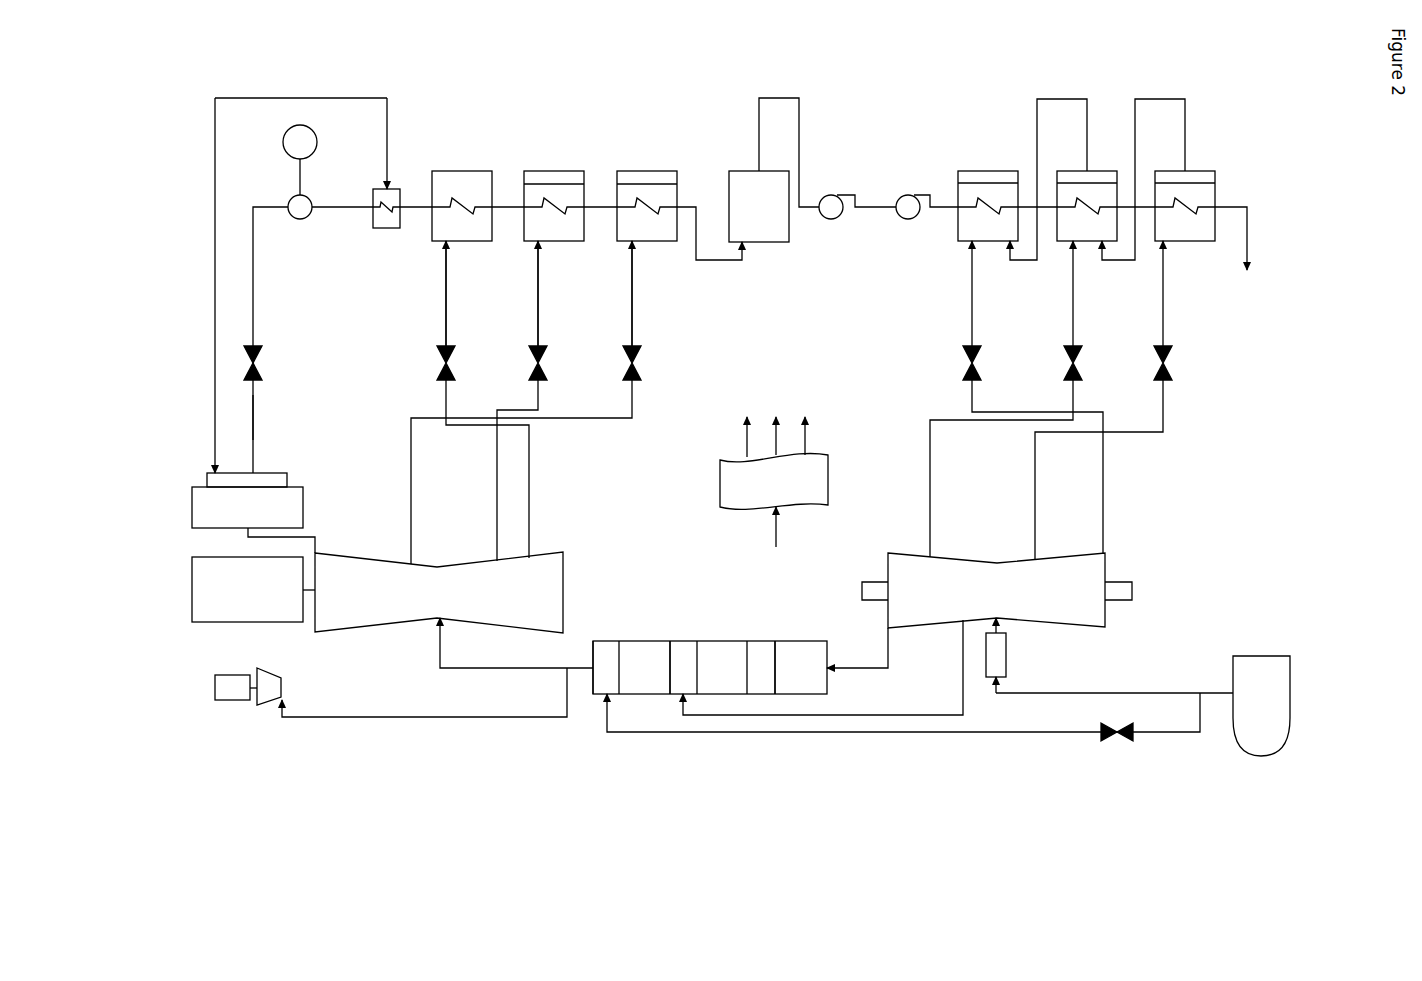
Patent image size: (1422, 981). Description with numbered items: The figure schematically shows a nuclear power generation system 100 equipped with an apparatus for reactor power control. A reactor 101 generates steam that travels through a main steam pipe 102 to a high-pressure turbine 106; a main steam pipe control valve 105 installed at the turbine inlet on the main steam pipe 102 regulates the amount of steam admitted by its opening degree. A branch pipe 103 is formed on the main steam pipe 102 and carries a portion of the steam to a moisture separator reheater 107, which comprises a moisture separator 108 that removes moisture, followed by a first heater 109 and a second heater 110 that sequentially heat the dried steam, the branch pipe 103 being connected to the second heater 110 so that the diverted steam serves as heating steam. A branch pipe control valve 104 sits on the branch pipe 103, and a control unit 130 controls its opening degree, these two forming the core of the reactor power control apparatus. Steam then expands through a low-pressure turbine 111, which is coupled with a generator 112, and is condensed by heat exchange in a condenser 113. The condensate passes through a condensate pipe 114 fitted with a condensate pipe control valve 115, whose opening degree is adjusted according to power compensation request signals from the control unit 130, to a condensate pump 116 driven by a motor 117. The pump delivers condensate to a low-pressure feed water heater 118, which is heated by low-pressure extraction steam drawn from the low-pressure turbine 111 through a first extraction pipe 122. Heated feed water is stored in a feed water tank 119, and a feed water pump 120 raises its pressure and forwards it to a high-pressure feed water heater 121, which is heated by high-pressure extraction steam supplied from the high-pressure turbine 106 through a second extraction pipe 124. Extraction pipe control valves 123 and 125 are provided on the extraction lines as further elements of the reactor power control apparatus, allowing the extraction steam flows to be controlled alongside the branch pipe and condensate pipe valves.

The nuclear power generation system 100 is at (1310, 800).
The reactor 101 is at (1290, 690).
The main steam pipe 102 is at (1163, 693).
The branch pipe 103 is at (1165, 733).
The branch pipe control valve 104 is at (1110, 741).
The main steam pipe control valve 105 is at (1006, 655).
The high-pressure turbine 106 is at (1107, 567).
The moisture separator reheater 107 is at (633, 632).
The moisture separator 108 is at (800, 678).
The first heater 109 is at (677, 690).
The second heater 110 is at (600, 692).
The low-pressure turbine 111 is at (380, 625).
The generator 112 is at (192, 594).
The condenser 113 is at (192, 512).
The condensate pipe 114 is at (252, 428).
The condensate pipe control valve 115 is at (247, 362).
The condensate pump 116 is at (302, 220).
The motor 117 is at (300, 125).
The low-pressure feed water heater 118 is at (648, 171).
The feed water tank 119 is at (742, 171).
The feed water pump 120 is at (910, 195).
The high-pressure feed water heater 121 is at (1210, 171).
The first extraction pipe 122 is at (529, 532).
The extraction pipe control valve 123 is at (632, 350).
The second extraction pipe 124 is at (930, 533).
The extraction pipe control valve 125 is at (1165, 370).
The control unit 130 is at (722, 505).